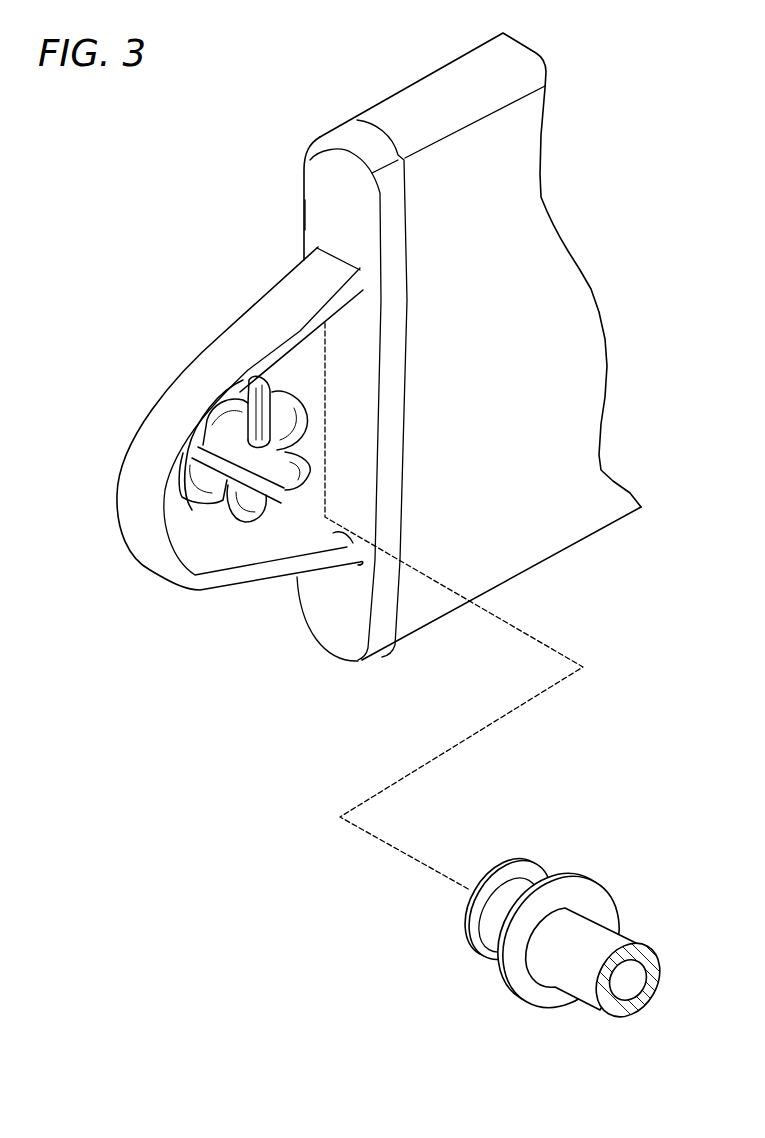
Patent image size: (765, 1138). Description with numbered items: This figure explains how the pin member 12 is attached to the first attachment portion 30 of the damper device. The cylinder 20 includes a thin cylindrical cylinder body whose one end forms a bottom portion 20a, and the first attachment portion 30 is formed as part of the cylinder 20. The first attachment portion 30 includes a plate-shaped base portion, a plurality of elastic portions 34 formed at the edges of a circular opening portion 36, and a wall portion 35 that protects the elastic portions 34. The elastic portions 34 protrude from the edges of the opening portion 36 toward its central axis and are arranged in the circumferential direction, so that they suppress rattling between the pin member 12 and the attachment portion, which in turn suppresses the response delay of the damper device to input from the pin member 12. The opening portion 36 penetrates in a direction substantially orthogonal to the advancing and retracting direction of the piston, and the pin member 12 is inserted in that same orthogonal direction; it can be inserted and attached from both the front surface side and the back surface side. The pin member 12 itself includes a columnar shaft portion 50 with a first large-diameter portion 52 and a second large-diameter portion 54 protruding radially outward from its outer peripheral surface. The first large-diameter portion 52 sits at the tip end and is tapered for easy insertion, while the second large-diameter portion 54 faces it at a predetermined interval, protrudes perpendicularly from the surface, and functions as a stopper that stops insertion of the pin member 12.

The pin member 12 is at (570, 969).
The cylinder 20 is at (563, 282).
The bottom portion 20a is at (320, 188).
The first attachment portion 30 is at (133, 425).
The elastic portions 34 is at (270, 407).
The wall portion 35 is at (140, 457).
The opening portion 36 is at (271, 461).
The columnar shaft portion 50 is at (497, 912).
The first large-diameter portion 52 is at (467, 923).
The second large-diameter portion 54 is at (517, 993).